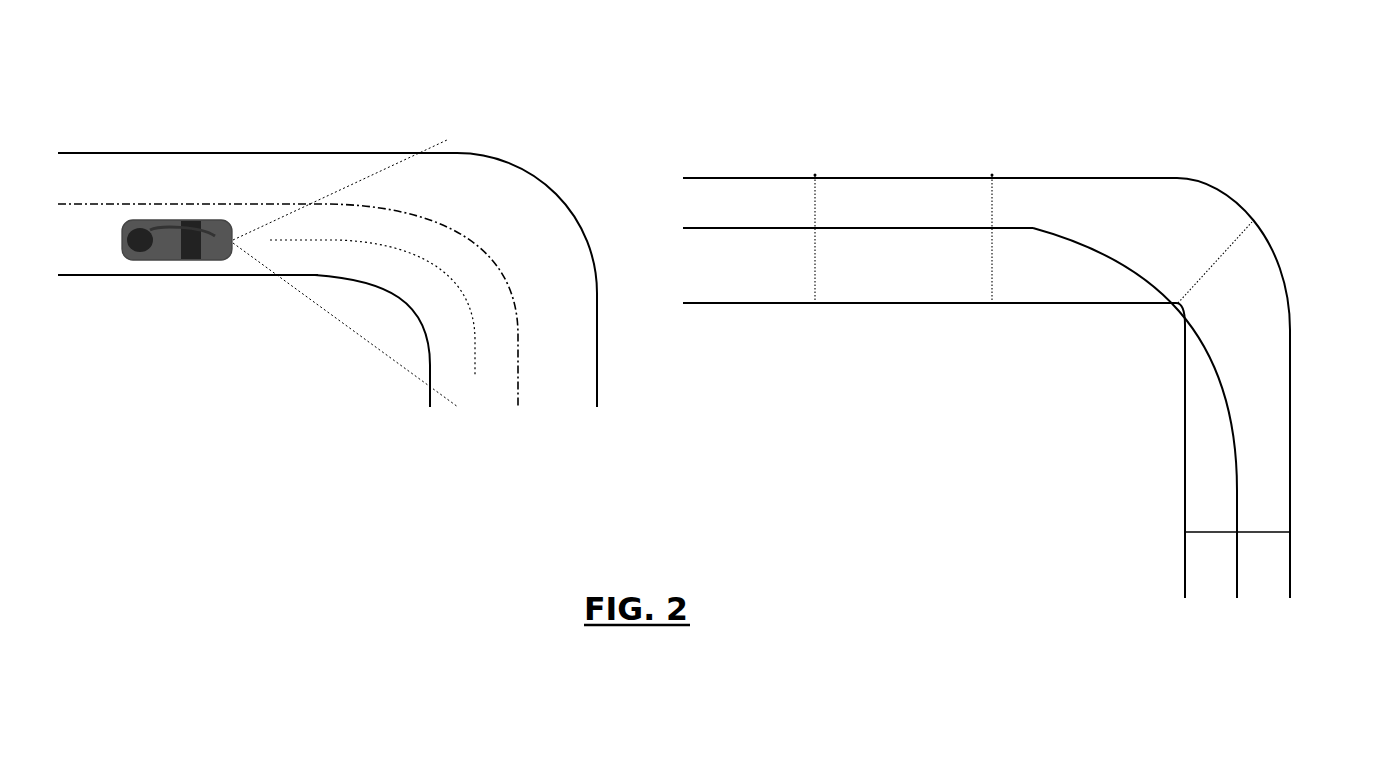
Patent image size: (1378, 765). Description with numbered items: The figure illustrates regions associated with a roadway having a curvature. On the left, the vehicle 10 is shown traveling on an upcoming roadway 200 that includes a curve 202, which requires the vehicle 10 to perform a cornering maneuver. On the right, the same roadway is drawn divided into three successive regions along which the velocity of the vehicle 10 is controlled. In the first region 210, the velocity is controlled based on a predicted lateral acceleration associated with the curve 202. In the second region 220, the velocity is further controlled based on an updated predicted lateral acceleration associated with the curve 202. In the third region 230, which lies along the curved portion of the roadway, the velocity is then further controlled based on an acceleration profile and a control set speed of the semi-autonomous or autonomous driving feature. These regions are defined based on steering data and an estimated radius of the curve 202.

The vehicle 10 is at (143, 240).
The upcoming roadway 200 is at (567, 96).
The curve 202 is at (558, 203).
The first region 210 is at (909, 123).
The second region 220 is at (1129, 151).
The third region 230 is at (1294, 270).